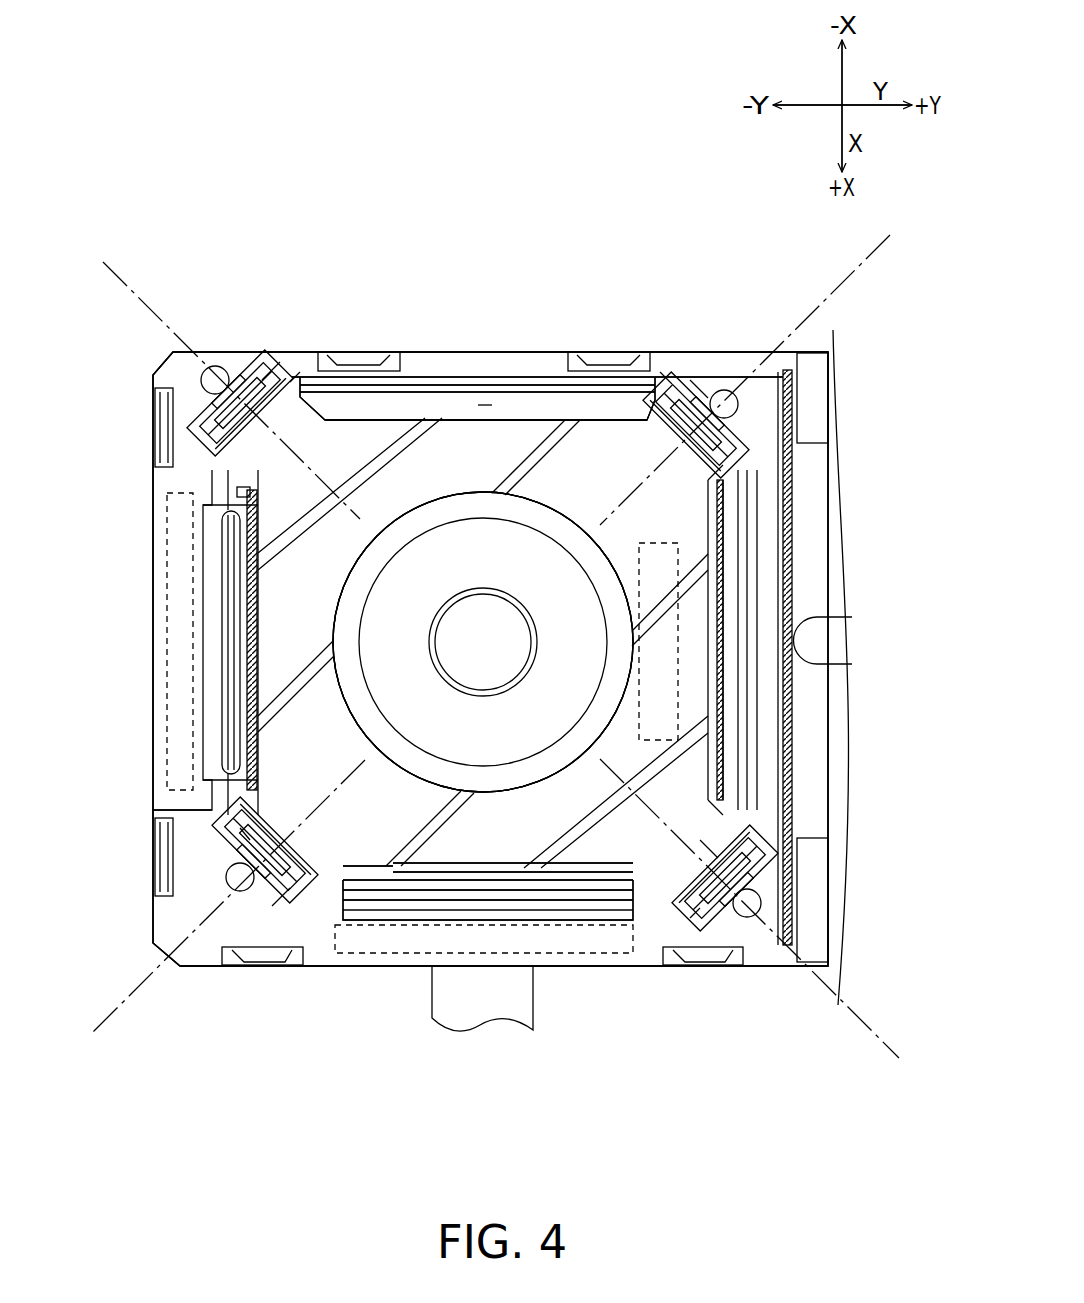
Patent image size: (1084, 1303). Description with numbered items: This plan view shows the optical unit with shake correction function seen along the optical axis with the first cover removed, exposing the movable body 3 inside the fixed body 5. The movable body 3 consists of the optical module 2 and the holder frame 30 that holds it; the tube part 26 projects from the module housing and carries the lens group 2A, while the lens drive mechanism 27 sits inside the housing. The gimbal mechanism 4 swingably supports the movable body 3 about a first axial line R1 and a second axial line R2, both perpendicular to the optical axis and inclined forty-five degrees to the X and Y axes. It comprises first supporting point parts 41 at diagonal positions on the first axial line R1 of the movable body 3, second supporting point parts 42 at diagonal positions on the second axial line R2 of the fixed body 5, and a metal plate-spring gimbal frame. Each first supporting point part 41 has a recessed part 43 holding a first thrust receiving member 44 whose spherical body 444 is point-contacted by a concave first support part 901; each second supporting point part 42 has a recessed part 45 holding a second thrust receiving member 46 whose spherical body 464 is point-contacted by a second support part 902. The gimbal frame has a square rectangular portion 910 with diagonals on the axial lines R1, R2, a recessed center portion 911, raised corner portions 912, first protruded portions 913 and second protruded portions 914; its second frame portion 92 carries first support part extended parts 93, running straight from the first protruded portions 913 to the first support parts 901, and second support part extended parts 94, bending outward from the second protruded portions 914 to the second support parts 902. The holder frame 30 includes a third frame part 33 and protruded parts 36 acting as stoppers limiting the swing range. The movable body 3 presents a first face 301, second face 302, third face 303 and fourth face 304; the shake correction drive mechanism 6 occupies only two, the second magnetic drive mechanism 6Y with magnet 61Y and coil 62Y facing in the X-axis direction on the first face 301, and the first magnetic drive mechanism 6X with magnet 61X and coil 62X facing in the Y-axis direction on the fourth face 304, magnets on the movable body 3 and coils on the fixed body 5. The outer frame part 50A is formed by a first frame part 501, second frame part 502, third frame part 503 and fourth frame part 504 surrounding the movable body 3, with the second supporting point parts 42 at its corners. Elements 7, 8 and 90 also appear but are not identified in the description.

The optical module 2 is at (483, 642).
The lens group 2A is at (484, 630).
The movable body 3 is at (850, 632).
The gimbal mechanism 4 is at (483, 642).
The fixed body 5 is at (537, 398).
The shake correction drive mechanism 6 is at (490, 659).
The housing 7 is at (840, 742).
The flexible printed board 8 is at (478, 1010).
The tube part 26 is at (455, 590).
The lens drive mechanism 27 is at (810, 584).
The holder frame 30 is at (490, 659).
The third frame part 33 is at (745, 715).
The protruded parts 36 is at (485, 405).
The first supporting point part 41 is at (735, 288).
The second supporting point part 42 is at (914, 906).
The recessed part 43 is at (688, 405).
The first thrust receiving member 44 is at (698, 400).
The recessed part 45 is at (220, 420).
The second thrust receiving member 46 is at (225, 382).
The outer frame part 50A is at (412, 350).
The magnet 61X is at (228, 580).
The magnet 61Y is at (590, 905).
The coil 62X is at (172, 545).
The coil 62Y is at (550, 950).
The first magnetic drive mechanism 6X is at (78, 590).
The second magnetic drive mechanism 6Y is at (650, 1058).
The gimbal frame 90 is at (437, 510).
The second frame portion 92 is at (483, 642).
The first support part extended part 93 is at (750, 477).
The second support part extended part 94 is at (278, 360).
The first face 301 is at (340, 935).
The second face 302 is at (362, 350).
The third face 303 is at (740, 810).
The fourth face 304 is at (240, 480).
The spherical body 444 is at (718, 424).
The spherical body 464 is at (215, 362).
The first frame part 501 is at (362, 965).
The second frame part 502 is at (562, 350).
The third frame part 503 is at (795, 525).
The fourth frame part 504 is at (203, 795).
The first support part 901 is at (740, 442).
The second support part 902 is at (260, 358).
The rectangular portion 910 is at (250, 655).
The center portion 911 is at (228, 750).
The corner portions 912 is at (252, 600).
The first protruded portions 913 is at (663, 385).
The second protruded portions 914 is at (300, 370).
The first axial line R1 is at (885, 265).
The second axial line R2 is at (128, 290).